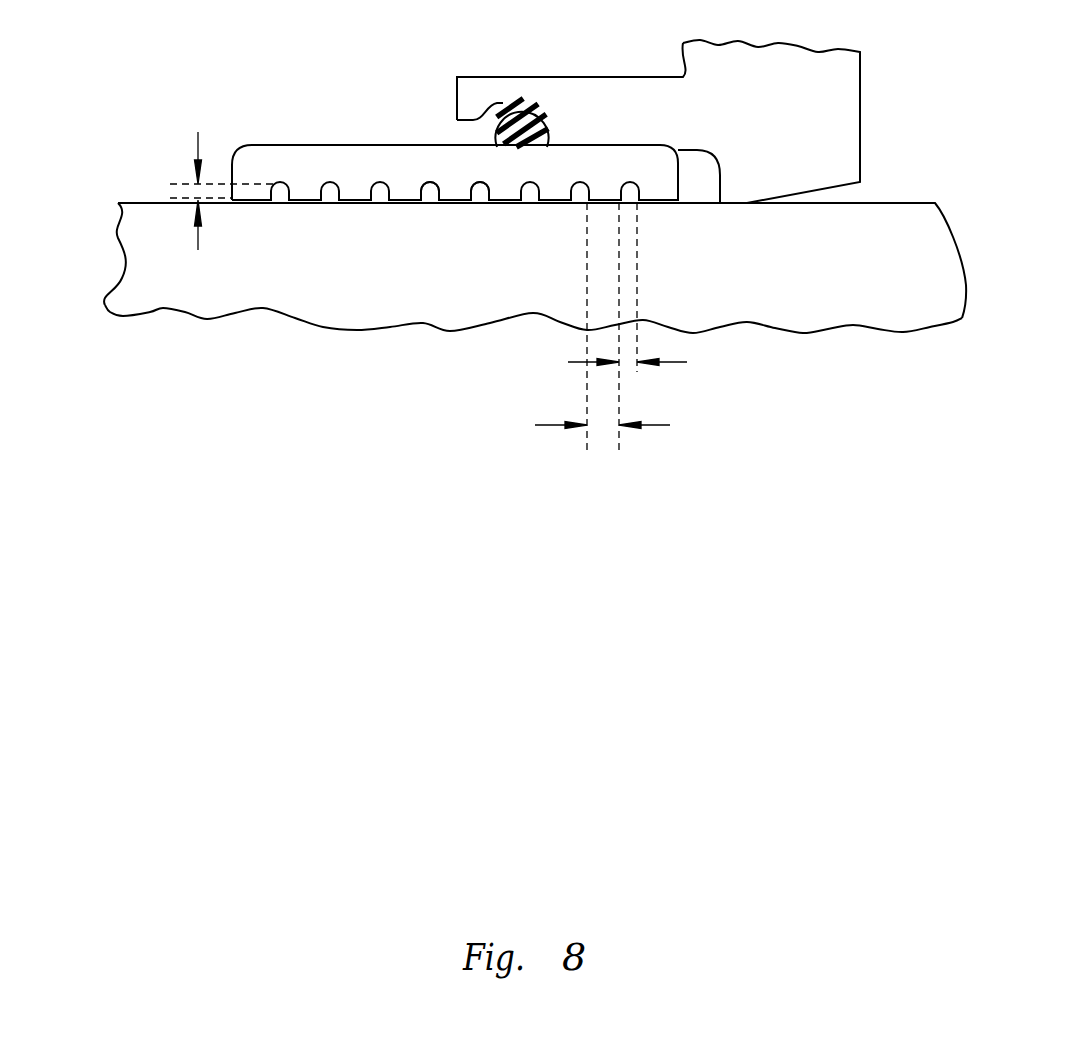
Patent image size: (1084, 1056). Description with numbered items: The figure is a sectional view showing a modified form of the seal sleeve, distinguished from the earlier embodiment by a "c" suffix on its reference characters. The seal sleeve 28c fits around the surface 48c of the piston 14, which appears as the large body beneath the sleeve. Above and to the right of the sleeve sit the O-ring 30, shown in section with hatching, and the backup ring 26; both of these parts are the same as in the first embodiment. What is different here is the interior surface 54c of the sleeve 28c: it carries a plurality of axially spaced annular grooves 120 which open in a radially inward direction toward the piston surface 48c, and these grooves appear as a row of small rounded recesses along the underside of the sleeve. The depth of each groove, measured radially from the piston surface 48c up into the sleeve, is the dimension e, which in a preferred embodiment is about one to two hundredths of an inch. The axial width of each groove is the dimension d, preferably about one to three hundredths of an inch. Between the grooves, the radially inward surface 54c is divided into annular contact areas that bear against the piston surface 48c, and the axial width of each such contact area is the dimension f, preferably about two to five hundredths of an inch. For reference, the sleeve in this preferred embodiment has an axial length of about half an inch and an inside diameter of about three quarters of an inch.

The piston 14 is at (147, 202).
The backup ring 26 is at (850, 150).
The seal sleeve 28c is at (343, 165).
The O-ring 30 is at (550, 115).
The surface of the piston 48c is at (163, 201).
The interior surface of the sleeve 54c is at (358, 203).
The annular grooves 120 is at (480, 203).
The depth dimension e is at (198, 192).
The axial width dimension d is at (627, 309).
The width of annular contact areas f is at (602, 326).